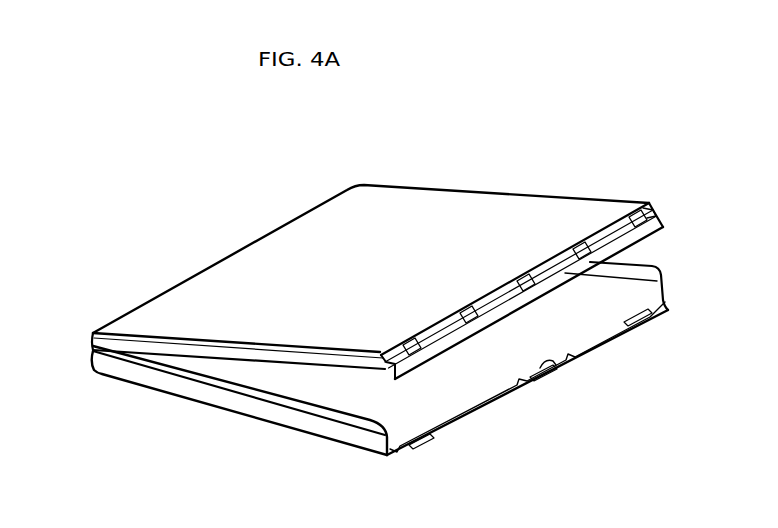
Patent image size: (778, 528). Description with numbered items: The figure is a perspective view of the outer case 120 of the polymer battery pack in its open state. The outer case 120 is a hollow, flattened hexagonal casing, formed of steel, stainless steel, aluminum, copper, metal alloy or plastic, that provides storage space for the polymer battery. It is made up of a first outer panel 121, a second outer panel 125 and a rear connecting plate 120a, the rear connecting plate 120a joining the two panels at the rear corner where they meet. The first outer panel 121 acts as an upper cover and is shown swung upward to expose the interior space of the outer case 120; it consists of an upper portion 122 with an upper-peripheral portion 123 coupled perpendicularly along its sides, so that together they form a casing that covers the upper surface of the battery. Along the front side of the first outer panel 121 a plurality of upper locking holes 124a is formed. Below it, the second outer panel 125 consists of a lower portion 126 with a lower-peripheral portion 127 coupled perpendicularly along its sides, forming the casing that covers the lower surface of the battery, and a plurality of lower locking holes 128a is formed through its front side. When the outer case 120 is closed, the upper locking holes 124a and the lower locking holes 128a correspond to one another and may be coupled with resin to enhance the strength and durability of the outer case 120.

The outer case 120 is at (345, 391).
The rear connecting plate 120a is at (88, 352).
The first outer panel 121 is at (223, 357).
The upper portion 122 is at (388, 217).
The upper-peripheral portion 123 is at (157, 336).
The upper locking holes 124a is at (580, 252).
The second outer panel 125 is at (240, 408).
The lower portion 126 is at (446, 400).
The lower-peripheral portion 127 is at (352, 443).
The lower locking holes 128a is at (558, 372).